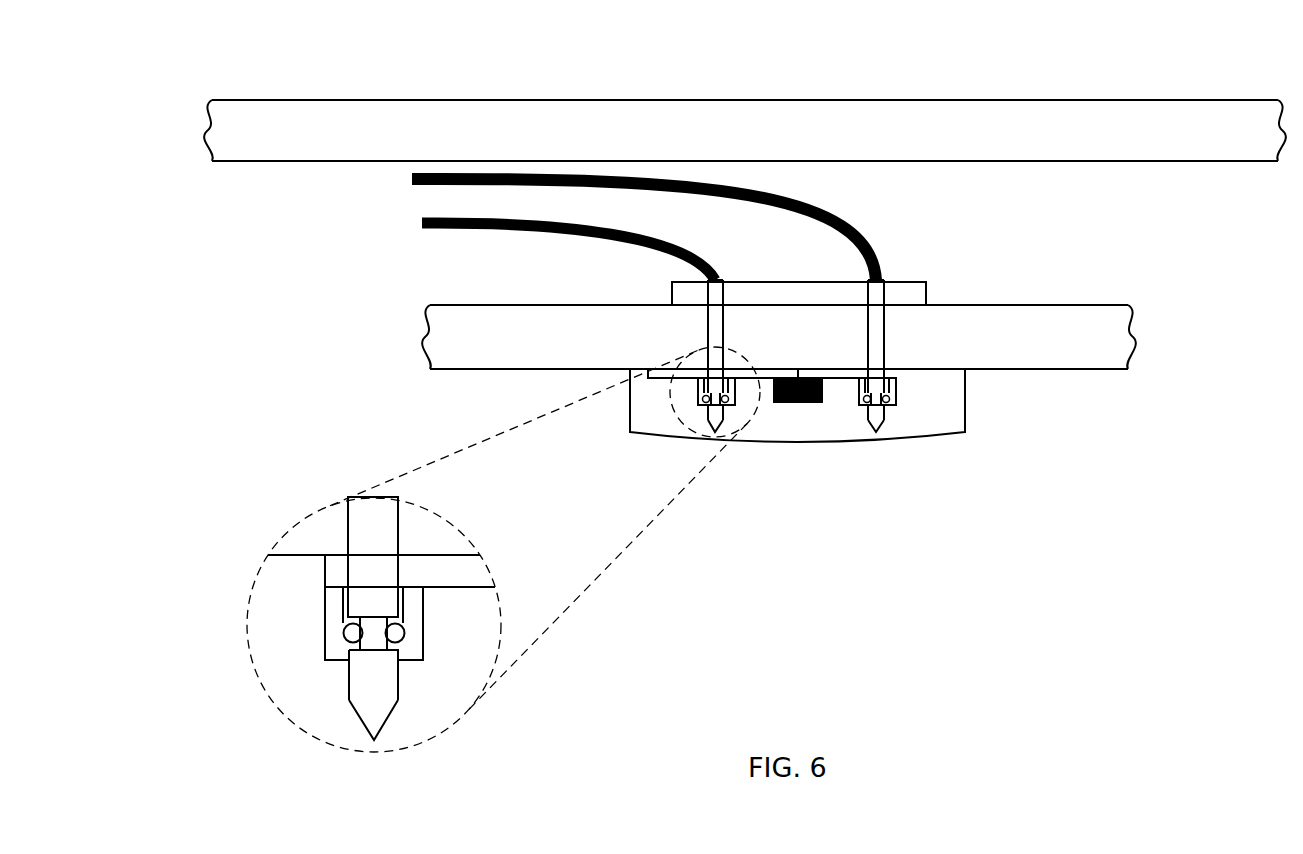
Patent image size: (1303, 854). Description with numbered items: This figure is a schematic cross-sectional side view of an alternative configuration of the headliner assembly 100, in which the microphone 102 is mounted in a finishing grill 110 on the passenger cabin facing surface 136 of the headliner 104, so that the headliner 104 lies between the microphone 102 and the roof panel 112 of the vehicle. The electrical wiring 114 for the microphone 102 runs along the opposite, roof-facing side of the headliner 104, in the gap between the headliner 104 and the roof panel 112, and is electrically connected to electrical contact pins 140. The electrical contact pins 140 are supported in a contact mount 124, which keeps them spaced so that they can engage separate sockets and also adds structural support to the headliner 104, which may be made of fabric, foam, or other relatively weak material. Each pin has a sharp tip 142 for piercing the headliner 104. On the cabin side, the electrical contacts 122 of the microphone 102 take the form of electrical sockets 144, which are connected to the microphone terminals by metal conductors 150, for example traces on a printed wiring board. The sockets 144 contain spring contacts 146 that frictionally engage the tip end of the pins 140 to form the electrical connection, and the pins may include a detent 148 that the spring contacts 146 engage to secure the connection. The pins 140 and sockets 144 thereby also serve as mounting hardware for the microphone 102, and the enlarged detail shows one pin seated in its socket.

The headliner assembly 100 is at (384, 257).
The microphone 102 is at (797, 405).
The headliner 104 is at (471, 362).
The finishing grill 110 is at (950, 415).
The roof panel 112 is at (601, 100).
The electrical wiring 114 is at (497, 228).
The electrical contacts 122 is at (897, 392).
The contact mount 124 is at (927, 282).
The passenger cabin facing surface 136 is at (1085, 378).
The electrical contact pins 140 is at (698, 335).
The sharp tip 142 is at (877, 434).
The electrical sockets 144 is at (900, 413).
The spring contacts 146 is at (343, 613).
The detent 148 is at (383, 654).
The metal conductors 150 is at (848, 380).